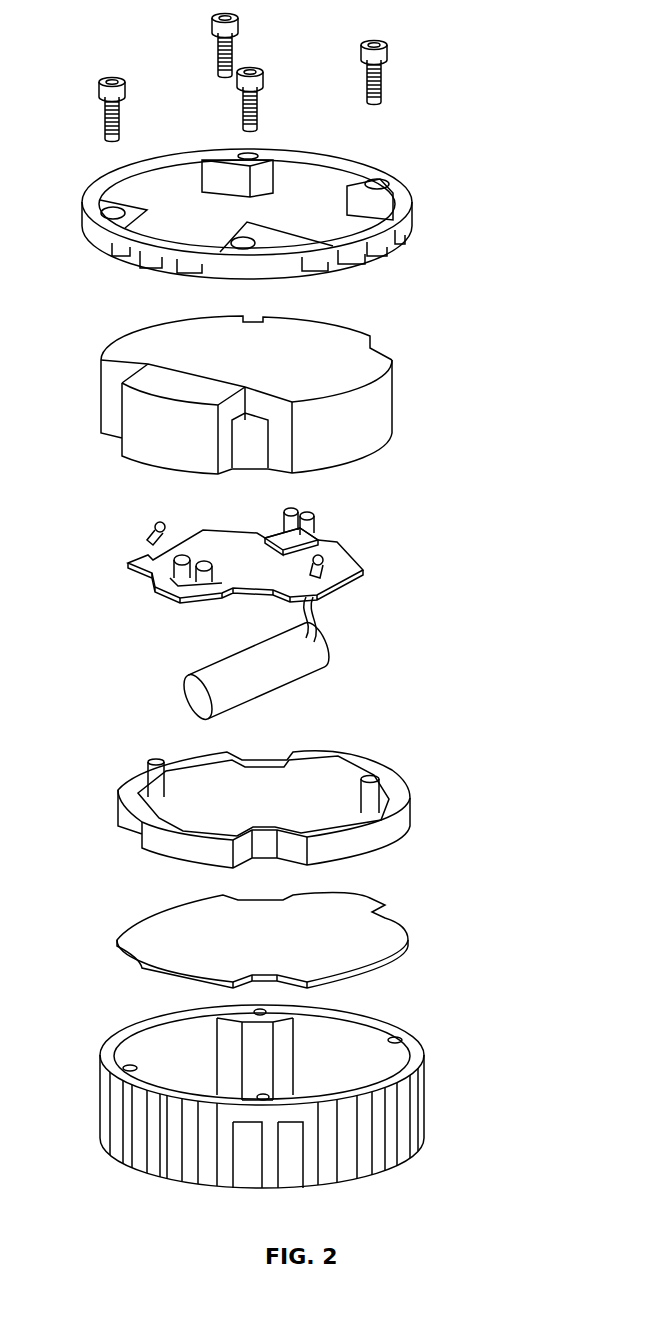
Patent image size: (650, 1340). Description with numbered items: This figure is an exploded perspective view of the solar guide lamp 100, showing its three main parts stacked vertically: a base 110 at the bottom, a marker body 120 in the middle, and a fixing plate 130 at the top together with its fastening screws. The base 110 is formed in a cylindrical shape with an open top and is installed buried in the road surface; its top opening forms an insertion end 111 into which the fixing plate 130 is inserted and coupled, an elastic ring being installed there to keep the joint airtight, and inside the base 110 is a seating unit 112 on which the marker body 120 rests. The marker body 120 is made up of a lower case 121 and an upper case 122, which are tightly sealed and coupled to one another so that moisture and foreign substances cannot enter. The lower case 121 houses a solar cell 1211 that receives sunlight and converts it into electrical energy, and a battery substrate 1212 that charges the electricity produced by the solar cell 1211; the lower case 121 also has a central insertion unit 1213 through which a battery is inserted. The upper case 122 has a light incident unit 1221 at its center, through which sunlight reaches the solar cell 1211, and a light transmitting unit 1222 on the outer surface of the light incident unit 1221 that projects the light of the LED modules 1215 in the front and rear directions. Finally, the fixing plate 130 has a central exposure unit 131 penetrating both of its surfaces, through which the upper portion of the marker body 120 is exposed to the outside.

The solar guide lamp 100 is at (535, 647).
The base 110 is at (304, 1092).
The insertion end 111 is at (380, 1025).
The seating unit 112 is at (160, 1055).
The marker body 120 is at (291, 589).
The lower case 121 is at (316, 809).
The solar cell 1211 is at (195, 545).
The battery substrate 1212 is at (172, 588).
The insertion unit 1213 is at (205, 797).
The LED module 1215 is at (320, 525).
The upper case 122 is at (281, 392).
The light incident unit 1221 is at (170, 347).
The light transmitting unit 1222 is at (160, 385).
The fixing plate 130 is at (286, 209).
The exposure unit 131 is at (313, 215).